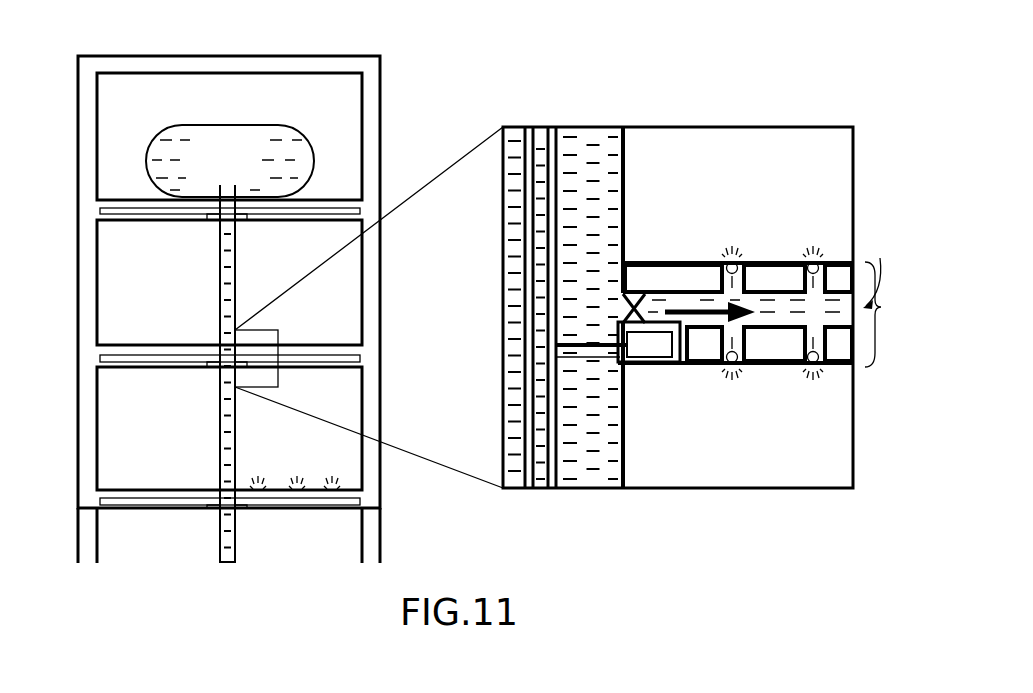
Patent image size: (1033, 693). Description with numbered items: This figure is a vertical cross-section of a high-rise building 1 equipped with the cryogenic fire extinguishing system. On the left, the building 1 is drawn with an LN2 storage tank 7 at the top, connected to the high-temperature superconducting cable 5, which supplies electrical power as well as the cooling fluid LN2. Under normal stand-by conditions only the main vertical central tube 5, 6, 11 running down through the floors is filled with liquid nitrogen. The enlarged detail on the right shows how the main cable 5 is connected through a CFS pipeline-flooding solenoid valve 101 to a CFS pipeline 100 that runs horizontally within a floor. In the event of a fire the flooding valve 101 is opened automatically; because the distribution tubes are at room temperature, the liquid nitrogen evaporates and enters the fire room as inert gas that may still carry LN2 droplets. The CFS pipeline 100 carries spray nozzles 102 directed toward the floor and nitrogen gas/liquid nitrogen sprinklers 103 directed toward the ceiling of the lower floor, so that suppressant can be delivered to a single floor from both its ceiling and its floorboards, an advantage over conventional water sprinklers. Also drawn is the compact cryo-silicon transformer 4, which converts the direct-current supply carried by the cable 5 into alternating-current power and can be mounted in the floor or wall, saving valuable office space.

The building 1 is at (385, 78).
The cryo-silicon transformer 4 is at (650, 380).
The high-temperature superconducting cable 5 is at (220, 258).
The main vertical central tube 6 is at (503, 257).
The LN2 storage tank 7 is at (257, 130).
The main vertical central tube 11 is at (220, 312).
The CFS pipeline 100 is at (310, 355).
The CFS pipeline-flooding solenoid valve 101 is at (640, 278).
The spray nozzles 102 is at (737, 262).
The nitrogen gas/liquid nitrogen sprinklers 103 is at (737, 363).